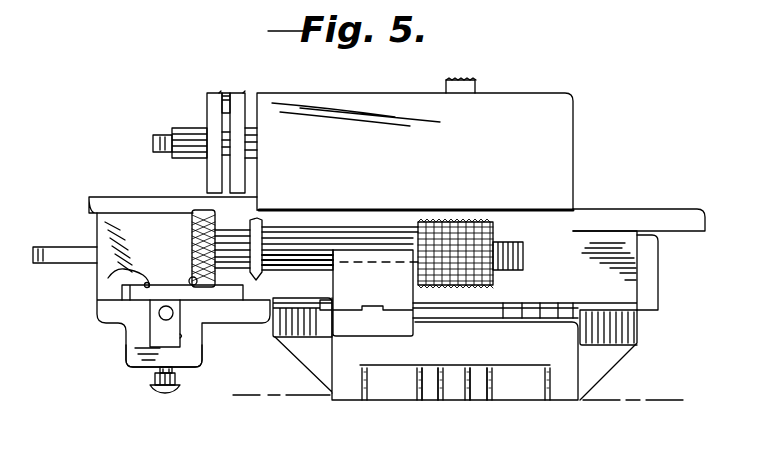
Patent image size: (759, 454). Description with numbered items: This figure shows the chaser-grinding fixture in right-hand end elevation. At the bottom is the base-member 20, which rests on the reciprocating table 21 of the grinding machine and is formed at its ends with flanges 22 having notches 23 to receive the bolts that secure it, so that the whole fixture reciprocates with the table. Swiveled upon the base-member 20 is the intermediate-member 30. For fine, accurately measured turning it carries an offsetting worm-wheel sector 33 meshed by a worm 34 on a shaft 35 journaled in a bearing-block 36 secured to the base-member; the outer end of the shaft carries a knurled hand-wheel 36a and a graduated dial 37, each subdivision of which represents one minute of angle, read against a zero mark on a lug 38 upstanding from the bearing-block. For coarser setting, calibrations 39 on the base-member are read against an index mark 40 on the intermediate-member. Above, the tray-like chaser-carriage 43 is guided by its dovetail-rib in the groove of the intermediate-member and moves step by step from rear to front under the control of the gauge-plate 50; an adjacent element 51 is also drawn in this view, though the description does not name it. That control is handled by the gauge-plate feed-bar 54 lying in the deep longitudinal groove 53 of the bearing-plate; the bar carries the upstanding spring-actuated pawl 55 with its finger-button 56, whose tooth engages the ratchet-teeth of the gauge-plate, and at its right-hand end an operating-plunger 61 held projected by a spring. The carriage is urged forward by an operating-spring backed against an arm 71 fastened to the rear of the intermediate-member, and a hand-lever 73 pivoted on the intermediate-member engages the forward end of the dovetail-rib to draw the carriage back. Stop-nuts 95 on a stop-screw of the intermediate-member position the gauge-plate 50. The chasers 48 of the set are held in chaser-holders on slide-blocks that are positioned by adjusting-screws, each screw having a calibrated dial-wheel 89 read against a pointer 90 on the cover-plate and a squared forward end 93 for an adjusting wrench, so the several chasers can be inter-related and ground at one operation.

The base-member 20 is at (458, 353).
The reciprocating table 21 is at (256, 396).
The flanges 22 is at (412, 384).
The notches 23 is at (457, 388).
The intermediate-member 30 is at (97, 250).
The worm-wheel sector 33 is at (518, 252).
The worm 34 is at (492, 278).
The shaft 35 is at (380, 228).
The bearing-block 36 is at (342, 200).
The knurled hand-wheel 36a is at (192, 245).
The graduated dial 37 is at (335, 293).
The lug 38 is at (263, 214).
The calibrations 39 is at (327, 320).
The index mark 40 is at (321, 300).
The chaser-carriage 43 is at (140, 207).
The chasers 48 is at (475, 88).
The gauge-plate 50 is at (142, 289).
The hook 51 is at (108, 277).
The longitudinal groove 53 is at (180, 338).
The gauge-plate feed-bar 54 is at (155, 332).
The pawl 55 is at (173, 371).
The finger-button 56 is at (158, 394).
The operating-plunger 61 is at (160, 319).
The arm 71 is at (653, 260).
The hand-lever 73 is at (33, 263).
The dial-wheel 89 is at (237, 113).
The pointer 90 is at (224, 95).
The squared end 93 is at (163, 134).
The stop-nuts 95 is at (189, 279).